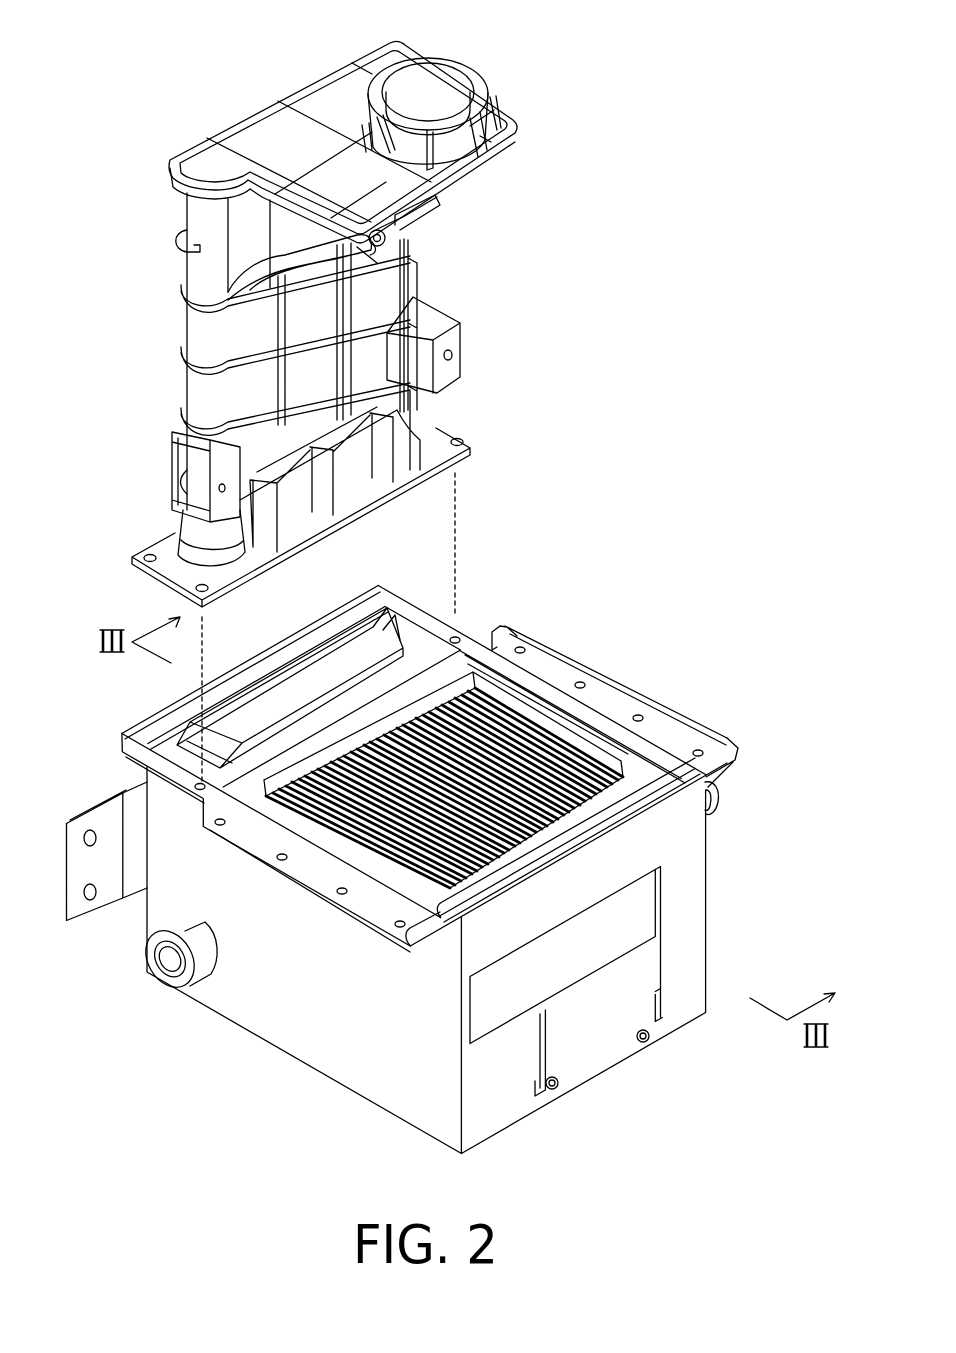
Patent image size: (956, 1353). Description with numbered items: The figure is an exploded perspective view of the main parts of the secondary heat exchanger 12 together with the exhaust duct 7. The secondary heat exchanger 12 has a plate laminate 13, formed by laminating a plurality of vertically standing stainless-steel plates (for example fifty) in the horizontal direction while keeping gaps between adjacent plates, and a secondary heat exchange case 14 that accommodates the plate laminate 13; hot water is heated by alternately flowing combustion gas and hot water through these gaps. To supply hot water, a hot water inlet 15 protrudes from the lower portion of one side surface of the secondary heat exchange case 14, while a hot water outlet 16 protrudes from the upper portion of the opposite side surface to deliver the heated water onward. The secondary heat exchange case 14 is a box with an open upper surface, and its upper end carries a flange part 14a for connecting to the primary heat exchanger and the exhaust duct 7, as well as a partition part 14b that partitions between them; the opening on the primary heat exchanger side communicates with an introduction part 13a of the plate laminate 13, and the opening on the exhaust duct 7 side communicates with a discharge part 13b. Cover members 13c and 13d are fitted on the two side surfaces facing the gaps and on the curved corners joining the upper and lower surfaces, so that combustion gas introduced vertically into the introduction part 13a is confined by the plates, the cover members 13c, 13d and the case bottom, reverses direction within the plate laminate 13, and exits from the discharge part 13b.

The exhaust duct 7 is at (183, 400).
The secondary heat exchanger 12 is at (614, 587).
The plate laminate 13 is at (643, 762).
The introduction part 13a is at (559, 727).
The discharge part 13b is at (408, 638).
The cover member 13c is at (458, 887).
The cover member 13d is at (230, 722).
The secondary heat exchange case 14 is at (708, 850).
The flange part 14a is at (737, 760).
The partition part 14b is at (465, 652).
The hot water inlet 15 is at (150, 975).
The hot water outlet 16 is at (718, 792).